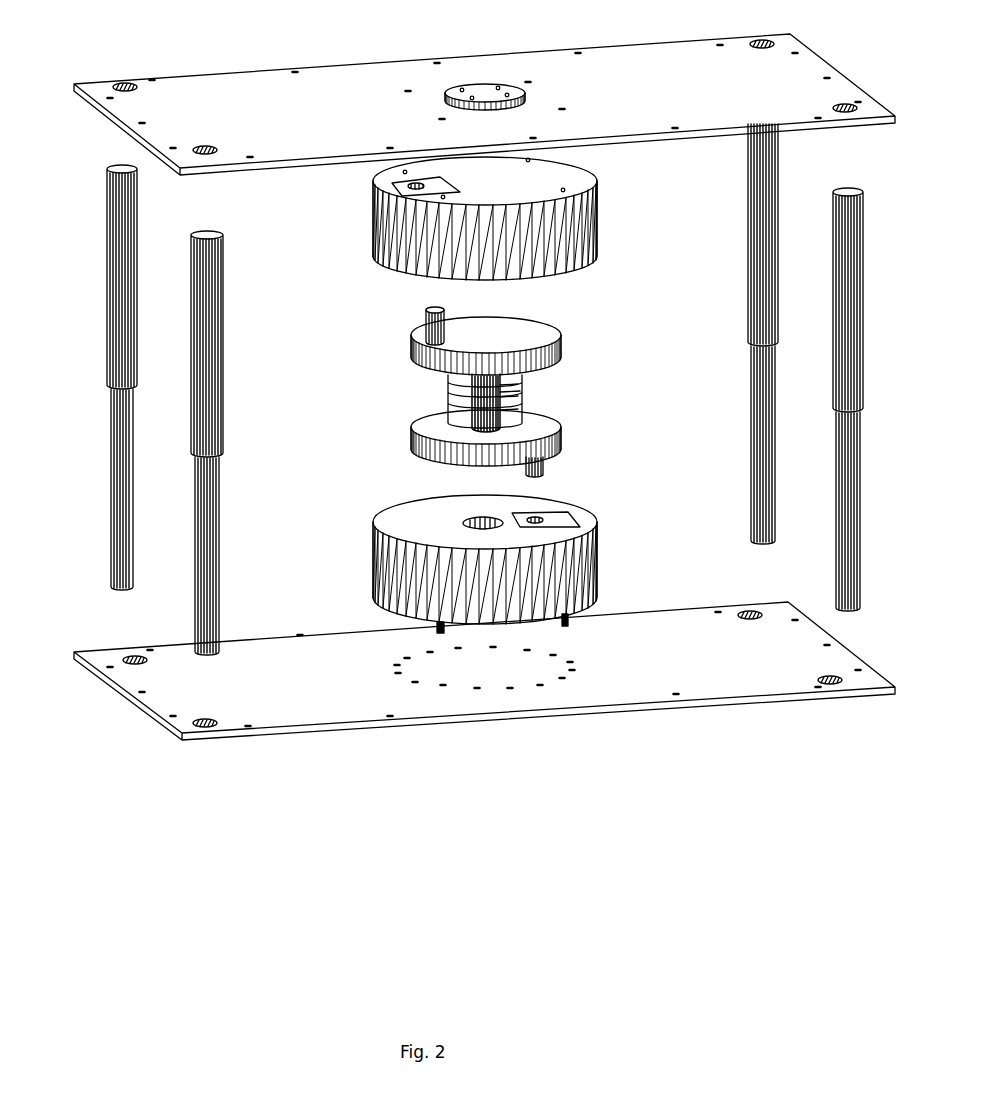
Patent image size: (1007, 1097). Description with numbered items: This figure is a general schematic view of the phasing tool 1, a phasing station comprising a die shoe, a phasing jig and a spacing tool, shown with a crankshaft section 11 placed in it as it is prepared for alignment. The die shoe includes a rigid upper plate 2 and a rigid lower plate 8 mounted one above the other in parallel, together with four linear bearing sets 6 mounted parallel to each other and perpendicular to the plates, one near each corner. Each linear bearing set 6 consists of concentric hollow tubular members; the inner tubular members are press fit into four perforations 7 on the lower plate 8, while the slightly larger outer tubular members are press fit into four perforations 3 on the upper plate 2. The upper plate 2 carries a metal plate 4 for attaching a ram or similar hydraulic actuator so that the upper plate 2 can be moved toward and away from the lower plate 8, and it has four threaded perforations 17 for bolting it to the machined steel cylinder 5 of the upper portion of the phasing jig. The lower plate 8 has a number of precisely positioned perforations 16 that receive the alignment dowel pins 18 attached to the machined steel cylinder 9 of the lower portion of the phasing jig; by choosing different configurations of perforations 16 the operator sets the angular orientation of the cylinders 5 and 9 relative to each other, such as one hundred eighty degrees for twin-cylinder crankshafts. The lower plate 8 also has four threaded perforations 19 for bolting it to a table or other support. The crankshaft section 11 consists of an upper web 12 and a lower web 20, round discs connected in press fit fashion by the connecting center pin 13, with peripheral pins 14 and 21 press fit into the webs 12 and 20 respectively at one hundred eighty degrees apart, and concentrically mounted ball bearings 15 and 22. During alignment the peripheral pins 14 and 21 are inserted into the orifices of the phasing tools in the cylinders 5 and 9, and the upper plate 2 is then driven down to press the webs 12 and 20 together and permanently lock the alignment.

The phasing tool 1 is at (658, 42).
The upper plate 2 is at (686, 94).
The perforations 3 is at (141, 91).
The metal plate 4 is at (493, 84).
The machined steel cylinder 5 is at (600, 217).
The linear bearing sets 6 is at (106, 310).
The perforations 7 is at (138, 664).
The lower plate 8 is at (304, 685).
The machined steel cylinder 9 is at (372, 512).
The crankshaft section 11 is at (494, 332).
The web 12 is at (553, 354).
The connecting center pin 13 is at (483, 397).
The peripheral pin 14 is at (428, 310).
The ball bearing 15 is at (532, 375).
The perforations 16 is at (561, 677).
The threaded perforations 17 is at (404, 91).
The alignment dowel pins 18 is at (436, 630).
The threaded perforations 19 is at (302, 634).
The web 20 is at (423, 445).
The peripheral pin 21 is at (521, 395).
The ball bearing 22 is at (521, 417).